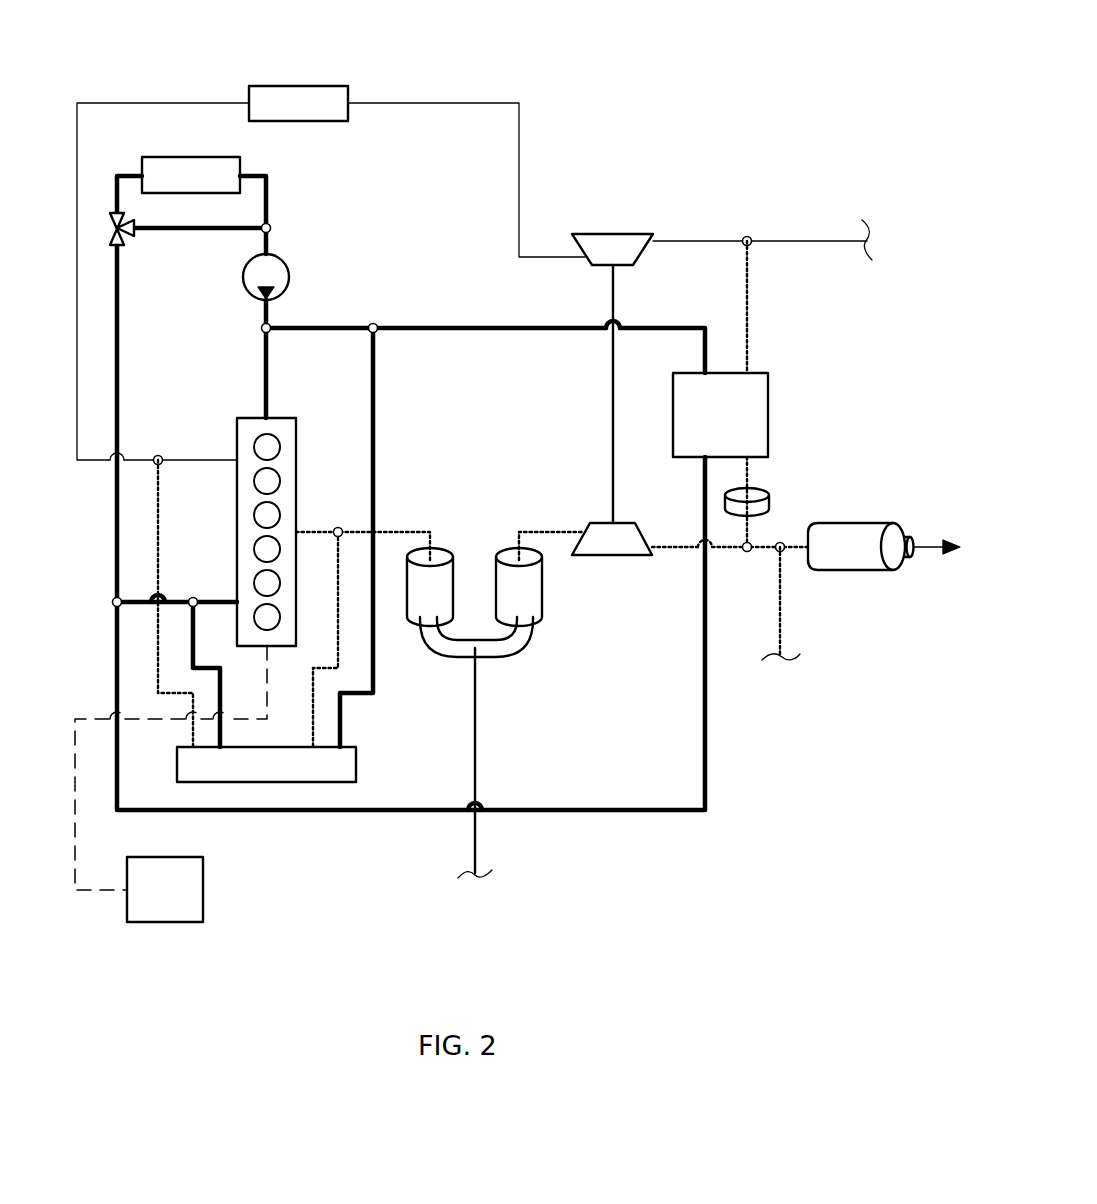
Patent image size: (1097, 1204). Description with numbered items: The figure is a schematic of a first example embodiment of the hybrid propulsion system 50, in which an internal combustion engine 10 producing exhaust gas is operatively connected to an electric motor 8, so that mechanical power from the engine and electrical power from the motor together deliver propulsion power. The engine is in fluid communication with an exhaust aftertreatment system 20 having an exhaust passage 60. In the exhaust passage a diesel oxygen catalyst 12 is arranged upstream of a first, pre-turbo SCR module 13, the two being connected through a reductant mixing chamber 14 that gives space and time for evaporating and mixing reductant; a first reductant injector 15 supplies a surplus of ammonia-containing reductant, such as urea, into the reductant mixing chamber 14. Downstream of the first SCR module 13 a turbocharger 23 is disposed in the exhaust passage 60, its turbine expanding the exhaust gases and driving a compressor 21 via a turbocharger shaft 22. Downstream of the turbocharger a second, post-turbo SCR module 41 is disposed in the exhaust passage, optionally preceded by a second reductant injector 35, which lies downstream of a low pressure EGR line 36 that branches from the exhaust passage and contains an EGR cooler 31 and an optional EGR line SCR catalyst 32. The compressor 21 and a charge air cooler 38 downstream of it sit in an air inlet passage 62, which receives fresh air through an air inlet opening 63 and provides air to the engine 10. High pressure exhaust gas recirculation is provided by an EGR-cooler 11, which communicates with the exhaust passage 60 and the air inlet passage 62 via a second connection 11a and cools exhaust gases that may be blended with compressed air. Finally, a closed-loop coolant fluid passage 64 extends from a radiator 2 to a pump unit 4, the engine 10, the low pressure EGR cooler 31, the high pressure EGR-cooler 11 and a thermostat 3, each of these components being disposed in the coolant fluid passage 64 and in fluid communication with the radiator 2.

The radiator 2 is at (195, 157).
The thermostat 3 is at (124, 236).
The pump unit 4 is at (289, 270).
The electric motor 8 is at (165, 922).
The internal combustion engine 10 is at (237, 490).
The EGR-cooler 11 is at (265, 782).
The second connection 11a is at (158, 675).
The diesel oxidation catalyst 12 is at (453, 570).
The first SCR module 13 is at (542, 583).
The reductant mixing chamber 14 is at (508, 642).
The first reductant injector 15 is at (475, 762).
The exhaust aftertreatment system 20 is at (673, 842).
The compressor 21 is at (615, 233).
The turbocharger shaft 22 is at (613, 444).
The turbocharger 23 is at (608, 556).
The EGR cooler for low pressure EGR 31 is at (768, 415).
The EGR line SCR catalyst 32 is at (760, 510).
The second reductant injector 35 is at (780, 590).
The low pressure EGR line 36 is at (808, 332).
The charge air cooler 38 is at (300, 86).
The second SCR module 41 is at (850, 548).
The hybrid propulsion system 50 is at (645, 80).
The exhaust passage 60 is at (405, 532).
The air inlet passage 62 is at (118, 103).
The air inlet opening 63 is at (805, 241).
The coolant fluid passage 64 is at (268, 186).